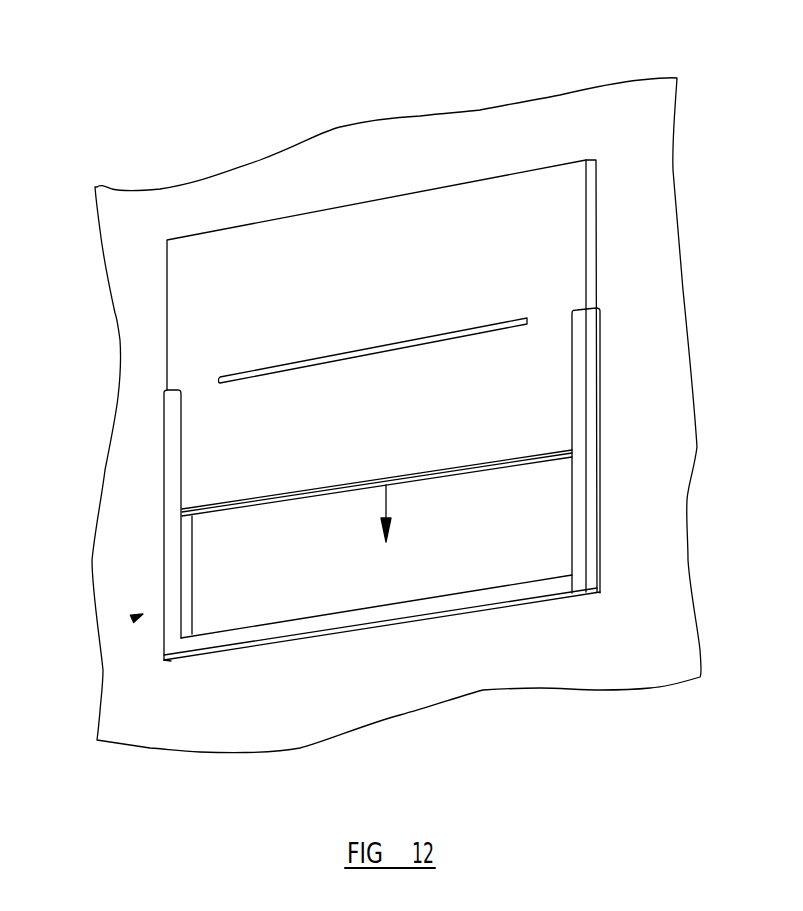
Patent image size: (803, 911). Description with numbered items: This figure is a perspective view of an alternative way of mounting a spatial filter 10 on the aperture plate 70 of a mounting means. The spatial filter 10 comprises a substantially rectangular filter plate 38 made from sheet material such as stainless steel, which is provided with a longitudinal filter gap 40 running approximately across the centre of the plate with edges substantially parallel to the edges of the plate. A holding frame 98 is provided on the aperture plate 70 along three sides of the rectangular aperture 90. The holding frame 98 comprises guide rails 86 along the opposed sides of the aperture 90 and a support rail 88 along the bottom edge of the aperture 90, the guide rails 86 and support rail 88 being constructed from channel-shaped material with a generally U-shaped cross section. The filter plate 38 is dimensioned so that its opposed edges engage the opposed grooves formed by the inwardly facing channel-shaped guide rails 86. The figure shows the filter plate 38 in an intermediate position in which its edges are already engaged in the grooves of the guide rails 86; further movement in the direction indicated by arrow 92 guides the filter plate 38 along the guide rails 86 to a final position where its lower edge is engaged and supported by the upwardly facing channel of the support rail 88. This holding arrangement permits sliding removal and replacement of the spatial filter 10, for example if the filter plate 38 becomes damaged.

The spatial filter 10 is at (388, 379).
The filter plate 38 is at (567, 231).
The filter gap 40 is at (487, 323).
The aperture plate 70 is at (118, 260).
The guide rails 86 is at (167, 525).
The support rail 88 is at (465, 602).
The rectangular aperture 90 is at (583, 574).
The arrow 92 is at (388, 500).
The holding frame 98 is at (135, 618).